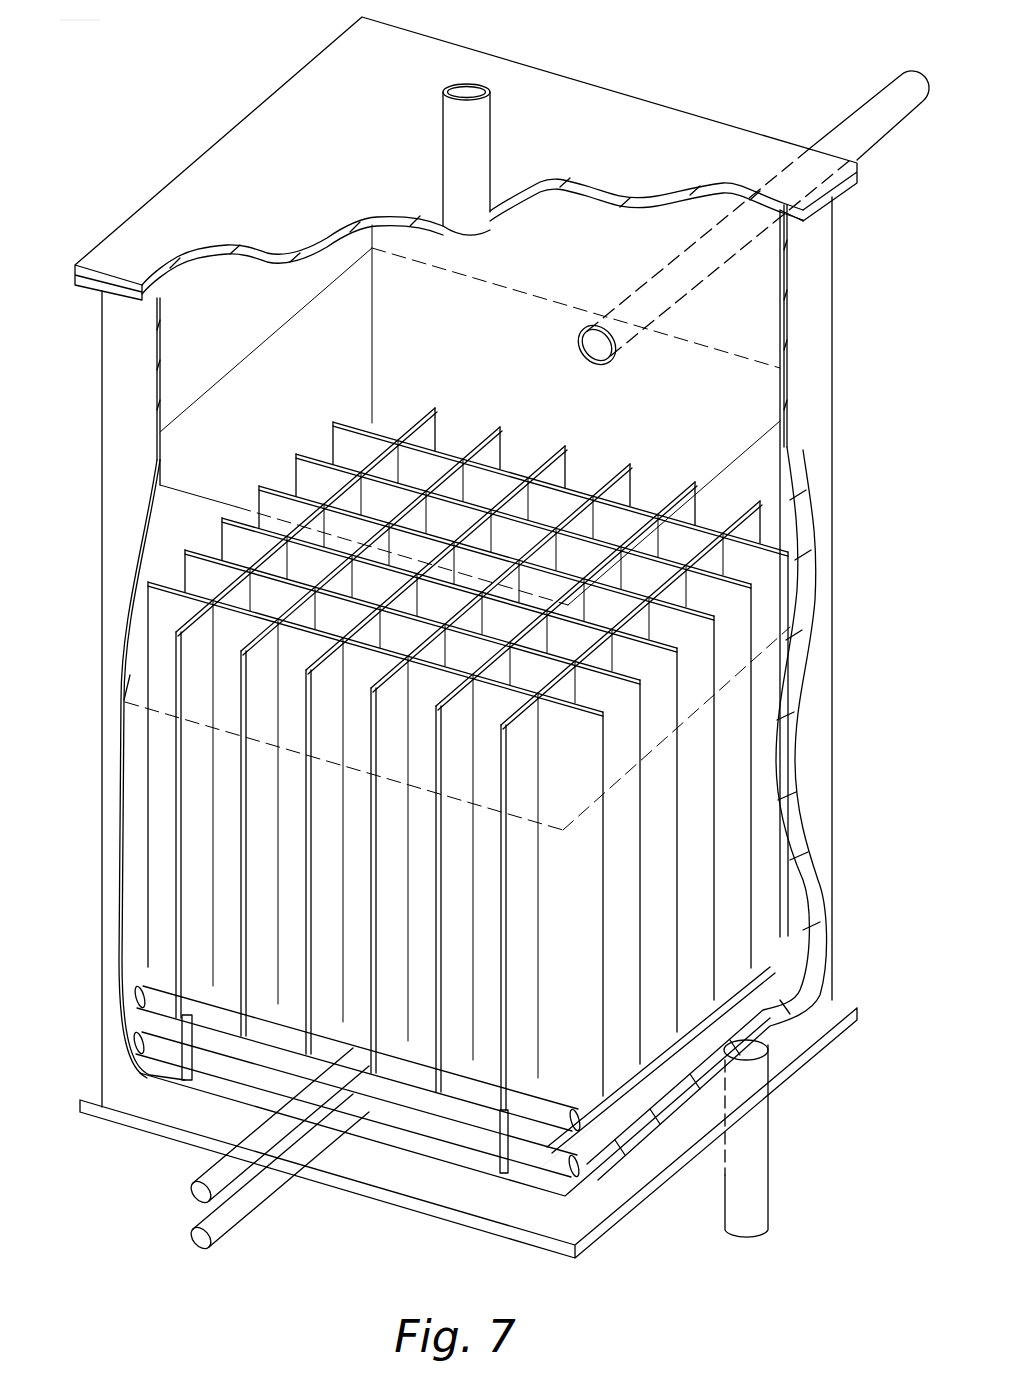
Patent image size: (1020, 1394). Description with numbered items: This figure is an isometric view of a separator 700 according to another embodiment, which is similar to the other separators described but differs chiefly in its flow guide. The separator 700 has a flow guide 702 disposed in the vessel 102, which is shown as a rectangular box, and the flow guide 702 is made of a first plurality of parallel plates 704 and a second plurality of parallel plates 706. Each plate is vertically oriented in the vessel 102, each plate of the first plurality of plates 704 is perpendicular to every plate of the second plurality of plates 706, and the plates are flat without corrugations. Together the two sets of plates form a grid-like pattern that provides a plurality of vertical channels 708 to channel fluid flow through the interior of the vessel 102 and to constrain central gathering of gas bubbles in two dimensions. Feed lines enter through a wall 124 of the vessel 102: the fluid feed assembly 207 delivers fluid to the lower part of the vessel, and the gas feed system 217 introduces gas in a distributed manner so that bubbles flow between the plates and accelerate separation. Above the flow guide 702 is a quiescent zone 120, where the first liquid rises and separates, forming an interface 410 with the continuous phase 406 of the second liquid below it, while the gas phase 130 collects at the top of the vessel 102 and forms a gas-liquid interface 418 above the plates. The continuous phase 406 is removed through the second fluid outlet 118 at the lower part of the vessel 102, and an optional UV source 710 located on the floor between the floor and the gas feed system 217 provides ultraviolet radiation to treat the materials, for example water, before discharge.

The separator 700 is at (150, 45).
The gas phase 130 is at (238, 298).
The gas-liquid interface 418 is at (560, 300).
The vessel 102 is at (833, 283).
The wall 124 is at (815, 452).
The flow guide 702 is at (790, 575).
The vertical channels 708 is at (480, 490).
The first plurality of parallel plates 704 is at (148, 600).
The second plurality of parallel plates 706 is at (175, 655).
The quiescent zone 120 is at (163, 538).
The interface 410 is at (548, 828).
The fluid feed assembly 207 is at (176, 977).
The continuous phase of the second liquid 406 is at (138, 1020).
The UV source 710 is at (458, 1160).
The gas feed system 217 is at (608, 1140).
The second fluid outlet 118 is at (772, 1155).